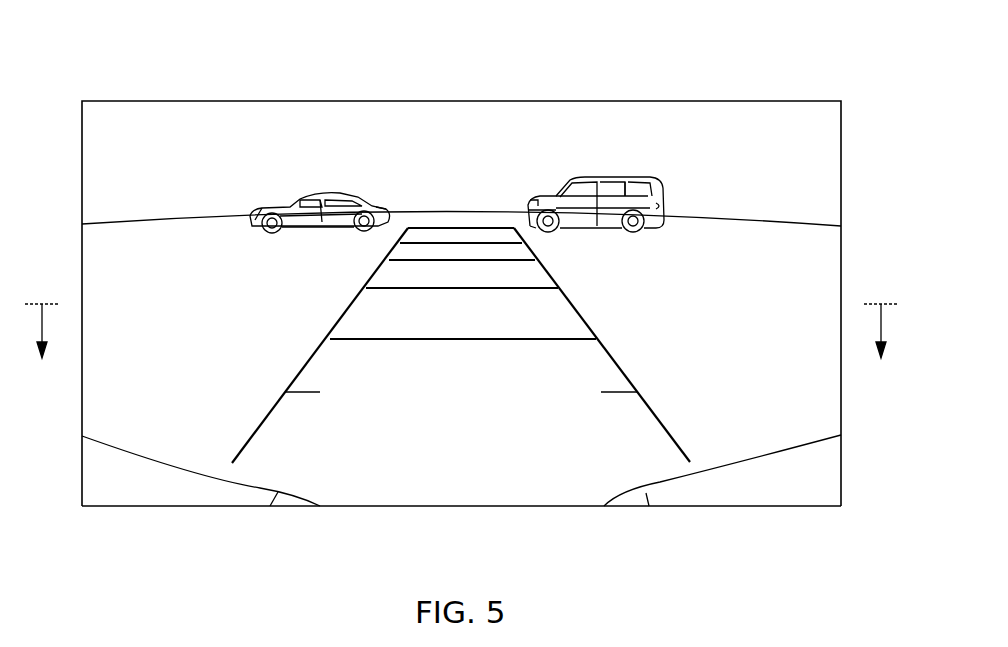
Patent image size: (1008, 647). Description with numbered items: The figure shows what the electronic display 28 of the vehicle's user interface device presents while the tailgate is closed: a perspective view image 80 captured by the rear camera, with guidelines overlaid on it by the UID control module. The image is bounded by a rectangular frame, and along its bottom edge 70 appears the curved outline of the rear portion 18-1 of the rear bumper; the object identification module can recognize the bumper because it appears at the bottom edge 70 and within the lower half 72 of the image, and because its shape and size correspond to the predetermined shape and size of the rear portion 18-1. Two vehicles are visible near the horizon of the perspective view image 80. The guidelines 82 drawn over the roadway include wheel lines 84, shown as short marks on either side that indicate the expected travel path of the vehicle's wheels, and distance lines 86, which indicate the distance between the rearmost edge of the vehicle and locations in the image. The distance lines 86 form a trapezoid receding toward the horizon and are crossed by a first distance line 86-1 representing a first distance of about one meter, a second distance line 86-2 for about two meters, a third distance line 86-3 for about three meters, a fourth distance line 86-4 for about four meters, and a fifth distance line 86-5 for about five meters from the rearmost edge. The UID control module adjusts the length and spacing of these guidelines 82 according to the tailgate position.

The electronic display 28 is at (180, 60).
The perspective view image 80 is at (285, 135).
The bottom edge 70 is at (194, 507).
The lower half 72 is at (461, 347).
The guidelines 82 is at (266, 308).
The rear portion 18-1 is at (762, 478).
The wheel lines 84 is at (280, 407).
The distance lines 86 is at (432, 372).
The first distance line 86-1 is at (473, 343).
The second distance line 86-2 is at (448, 290).
The third distance line 86-3 is at (503, 262).
The fourth distance line 86-4 is at (414, 243).
The fifth distance line 86-5 is at (462, 232).